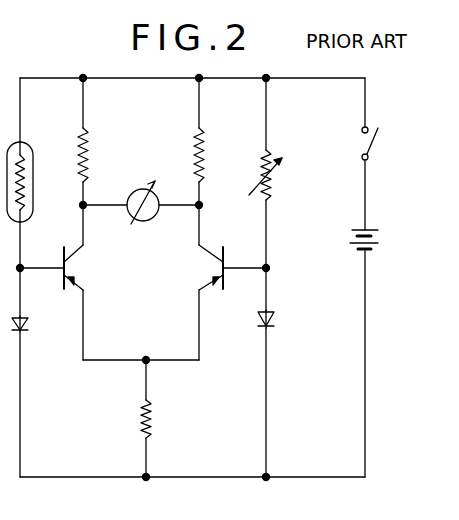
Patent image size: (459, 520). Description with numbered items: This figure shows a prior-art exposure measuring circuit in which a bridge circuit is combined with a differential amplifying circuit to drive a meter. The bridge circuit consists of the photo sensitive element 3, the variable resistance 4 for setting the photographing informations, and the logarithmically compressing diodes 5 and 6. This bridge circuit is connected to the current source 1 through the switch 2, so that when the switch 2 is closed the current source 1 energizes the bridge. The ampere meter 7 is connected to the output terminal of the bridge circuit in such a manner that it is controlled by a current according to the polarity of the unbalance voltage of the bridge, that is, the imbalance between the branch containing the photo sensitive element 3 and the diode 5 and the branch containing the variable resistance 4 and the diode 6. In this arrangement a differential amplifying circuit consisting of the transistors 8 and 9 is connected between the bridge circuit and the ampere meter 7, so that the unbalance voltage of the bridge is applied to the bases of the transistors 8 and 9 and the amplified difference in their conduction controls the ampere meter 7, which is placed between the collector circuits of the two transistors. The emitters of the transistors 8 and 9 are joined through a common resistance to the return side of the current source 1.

The current source 1 is at (352, 243).
The switch 2 is at (362, 148).
The photo sensitive element 3 is at (30, 146).
The variable resistance 4 is at (262, 170).
The logarithmically compressing diode 5 is at (29, 326).
The logarithmically compressing diode 6 is at (258, 320).
The ampere meter 7 is at (142, 188).
The transistor 8 is at (76, 268).
The transistor 9 is at (214, 268).